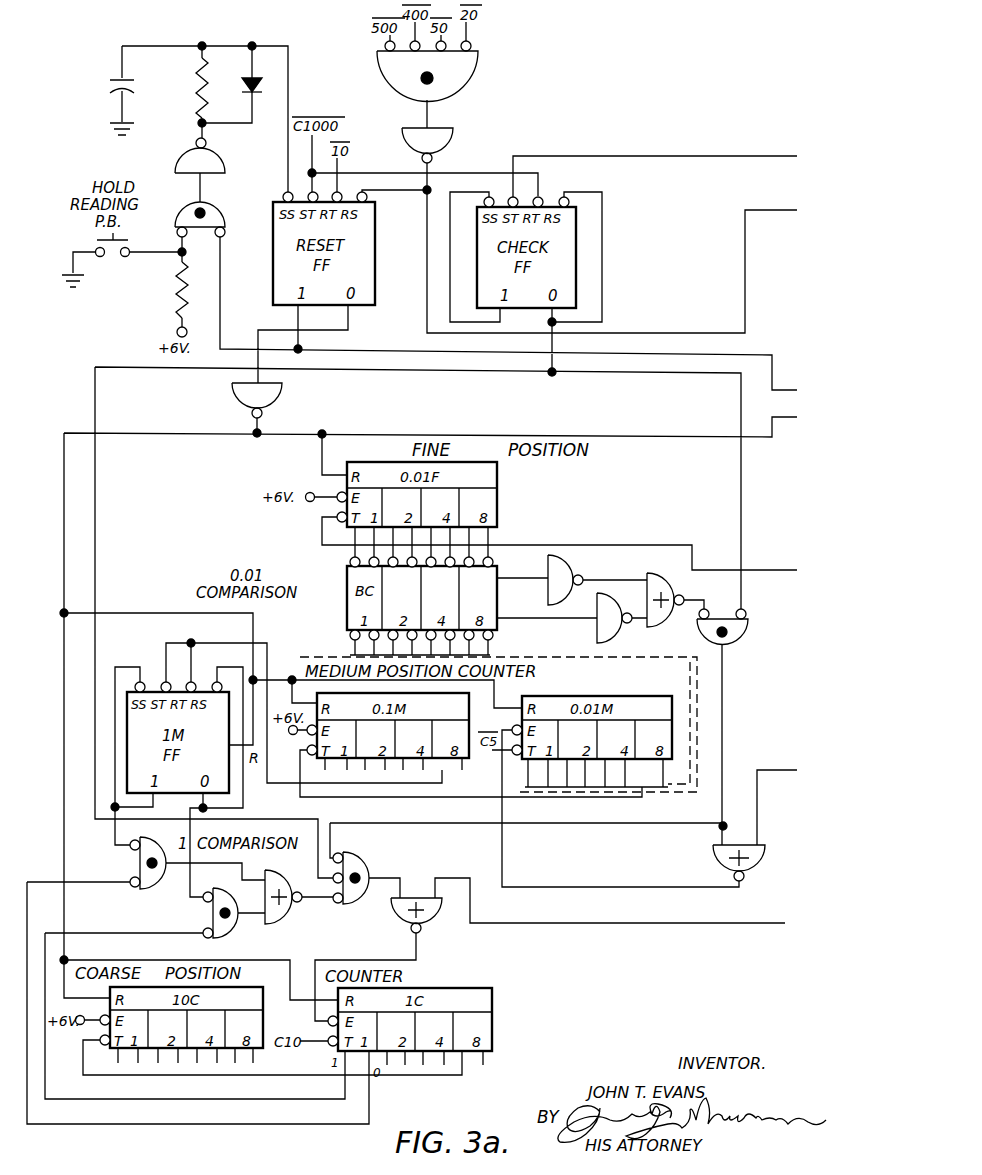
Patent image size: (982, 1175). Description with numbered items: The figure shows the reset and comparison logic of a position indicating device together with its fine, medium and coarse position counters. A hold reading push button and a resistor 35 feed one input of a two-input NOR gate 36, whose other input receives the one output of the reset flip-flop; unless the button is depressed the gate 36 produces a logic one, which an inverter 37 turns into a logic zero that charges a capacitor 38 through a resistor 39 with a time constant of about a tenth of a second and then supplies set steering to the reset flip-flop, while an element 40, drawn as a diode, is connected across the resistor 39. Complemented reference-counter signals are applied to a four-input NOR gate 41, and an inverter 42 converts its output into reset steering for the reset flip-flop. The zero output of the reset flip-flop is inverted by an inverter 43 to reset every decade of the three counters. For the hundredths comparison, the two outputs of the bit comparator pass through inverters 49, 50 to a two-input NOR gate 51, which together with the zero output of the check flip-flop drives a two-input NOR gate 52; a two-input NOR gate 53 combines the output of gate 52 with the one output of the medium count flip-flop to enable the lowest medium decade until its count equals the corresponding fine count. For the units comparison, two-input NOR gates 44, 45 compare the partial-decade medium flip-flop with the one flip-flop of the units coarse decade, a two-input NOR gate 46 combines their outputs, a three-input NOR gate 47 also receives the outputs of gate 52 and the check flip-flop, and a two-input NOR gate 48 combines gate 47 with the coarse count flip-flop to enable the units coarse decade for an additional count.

The resistor 35 is at (172, 291).
The two-input NOR gate 36 is at (226, 218).
The inverter 37 is at (228, 165).
The capacitor 38 is at (113, 83).
The resistor 39 is at (196, 85).
The diode 40 is at (257, 80).
The four-input NOR gate 41 is at (487, 59).
The inverter 42 is at (460, 130).
The inverter 43 is at (282, 396).
The two-input NOR gate 44 is at (147, 889).
The two-input NOR gate 45 is at (243, 925).
The two-input NOR gate 46 is at (294, 918).
The three-input NOR gate 47 is at (368, 862).
The two-input NOR gate 48 is at (432, 920).
The inverter 49 is at (575, 569).
The inverter 50 is at (592, 628).
The two-input NOR gate 51 is at (670, 571).
The two-input NOR gate 52 is at (752, 613).
The two-input NOR gate 53 is at (710, 857).